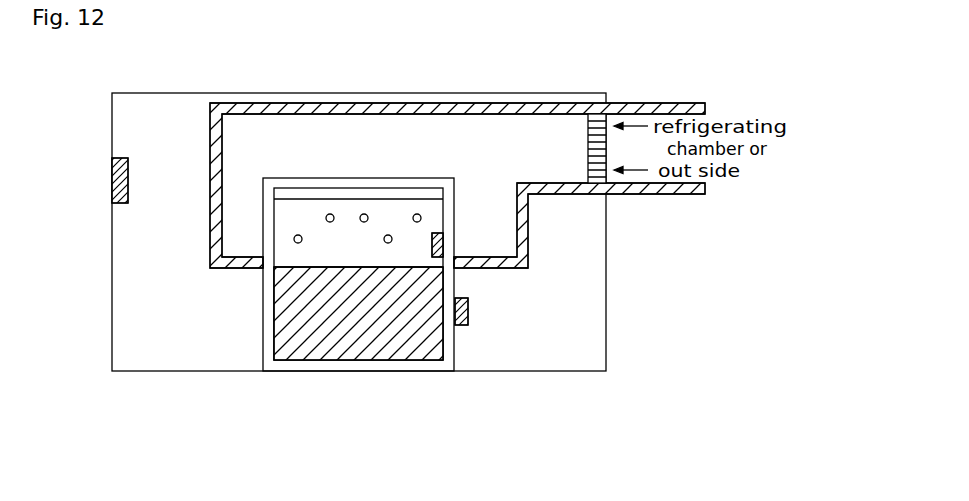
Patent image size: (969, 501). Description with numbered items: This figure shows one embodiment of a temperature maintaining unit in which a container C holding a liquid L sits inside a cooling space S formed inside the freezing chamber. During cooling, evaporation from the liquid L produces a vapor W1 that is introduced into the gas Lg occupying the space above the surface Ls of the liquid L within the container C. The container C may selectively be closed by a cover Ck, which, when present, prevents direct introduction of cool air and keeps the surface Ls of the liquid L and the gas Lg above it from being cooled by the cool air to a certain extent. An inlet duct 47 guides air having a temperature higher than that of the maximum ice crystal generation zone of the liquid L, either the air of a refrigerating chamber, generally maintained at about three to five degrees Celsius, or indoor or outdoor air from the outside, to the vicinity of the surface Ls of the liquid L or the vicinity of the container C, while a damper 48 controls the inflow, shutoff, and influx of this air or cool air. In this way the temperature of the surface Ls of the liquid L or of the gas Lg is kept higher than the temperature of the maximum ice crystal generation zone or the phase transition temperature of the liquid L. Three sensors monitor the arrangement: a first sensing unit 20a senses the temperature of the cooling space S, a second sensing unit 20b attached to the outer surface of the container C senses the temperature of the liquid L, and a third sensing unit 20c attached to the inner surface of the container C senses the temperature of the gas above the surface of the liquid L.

The first sensing unit 20a is at (112, 178).
The second sensing unit 20b is at (468, 311).
The third sensing unit 20c is at (443, 236).
The inlet duct 47 is at (487, 102).
The damper 48 is at (588, 165).
The cooling space S is at (359, 232).
The liquid L is at (322, 335).
The surface of the liquid Ls is at (293, 267).
The gas Lg is at (328, 241).
The vapor W1 is at (388, 235).
The cover Ck is at (445, 178).
The container C is at (452, 333).